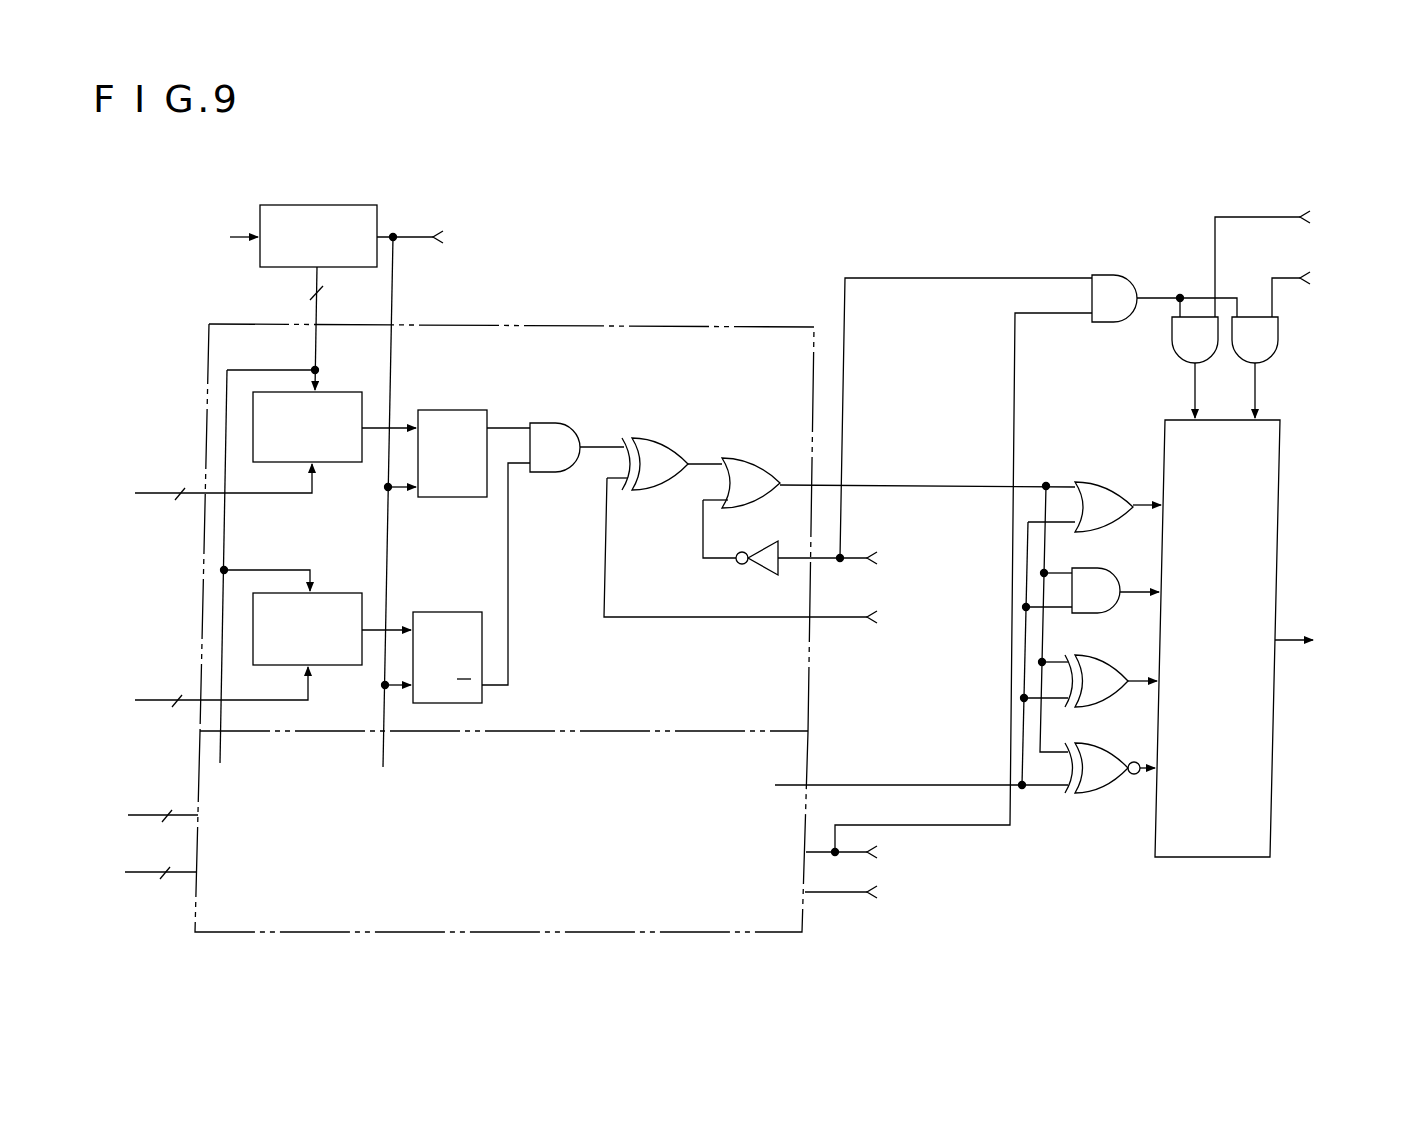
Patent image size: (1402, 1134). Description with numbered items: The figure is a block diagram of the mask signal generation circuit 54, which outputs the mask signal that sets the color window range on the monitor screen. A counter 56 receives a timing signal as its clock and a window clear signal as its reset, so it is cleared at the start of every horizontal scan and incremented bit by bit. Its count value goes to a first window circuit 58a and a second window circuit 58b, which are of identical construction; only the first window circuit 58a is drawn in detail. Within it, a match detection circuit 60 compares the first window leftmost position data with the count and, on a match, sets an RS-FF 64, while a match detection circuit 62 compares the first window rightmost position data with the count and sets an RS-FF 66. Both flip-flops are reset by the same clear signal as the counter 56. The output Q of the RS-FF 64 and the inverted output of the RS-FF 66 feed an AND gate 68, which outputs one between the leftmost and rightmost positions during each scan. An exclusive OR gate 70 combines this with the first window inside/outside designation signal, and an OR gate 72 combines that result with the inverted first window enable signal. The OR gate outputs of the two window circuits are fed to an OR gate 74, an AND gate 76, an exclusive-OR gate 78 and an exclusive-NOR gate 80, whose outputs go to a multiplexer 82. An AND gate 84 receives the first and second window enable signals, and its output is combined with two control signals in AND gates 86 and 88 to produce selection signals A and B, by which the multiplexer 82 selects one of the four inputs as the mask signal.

The mask signal generation circuit 54 is at (946, 239).
The counter 56 is at (358, 217).
The first window circuit 58a is at (604, 502).
The second window circuit 58b is at (606, 622).
The match detection circuit 60 is at (338, 400).
The match detection circuit 62 is at (328, 598).
The RS-FF 64 is at (458, 408).
The RS-FF 66 is at (448, 610).
The AND gate 68 is at (556, 430).
The exclusive OR gate 70 is at (655, 450).
The OR gate 72 is at (746, 466).
The OR gate 74 is at (1101, 492).
The AND gate 76 is at (1104, 582).
The exclusive-OR gate 78 is at (1097, 668).
The exclusive-NOR gate 80 is at (1099, 756).
The multiplexer 82 is at (1162, 812).
The AND gate 84 is at (1101, 318).
The AND gate 86 is at (1176, 352).
The AND gate 88 is at (1267, 350).